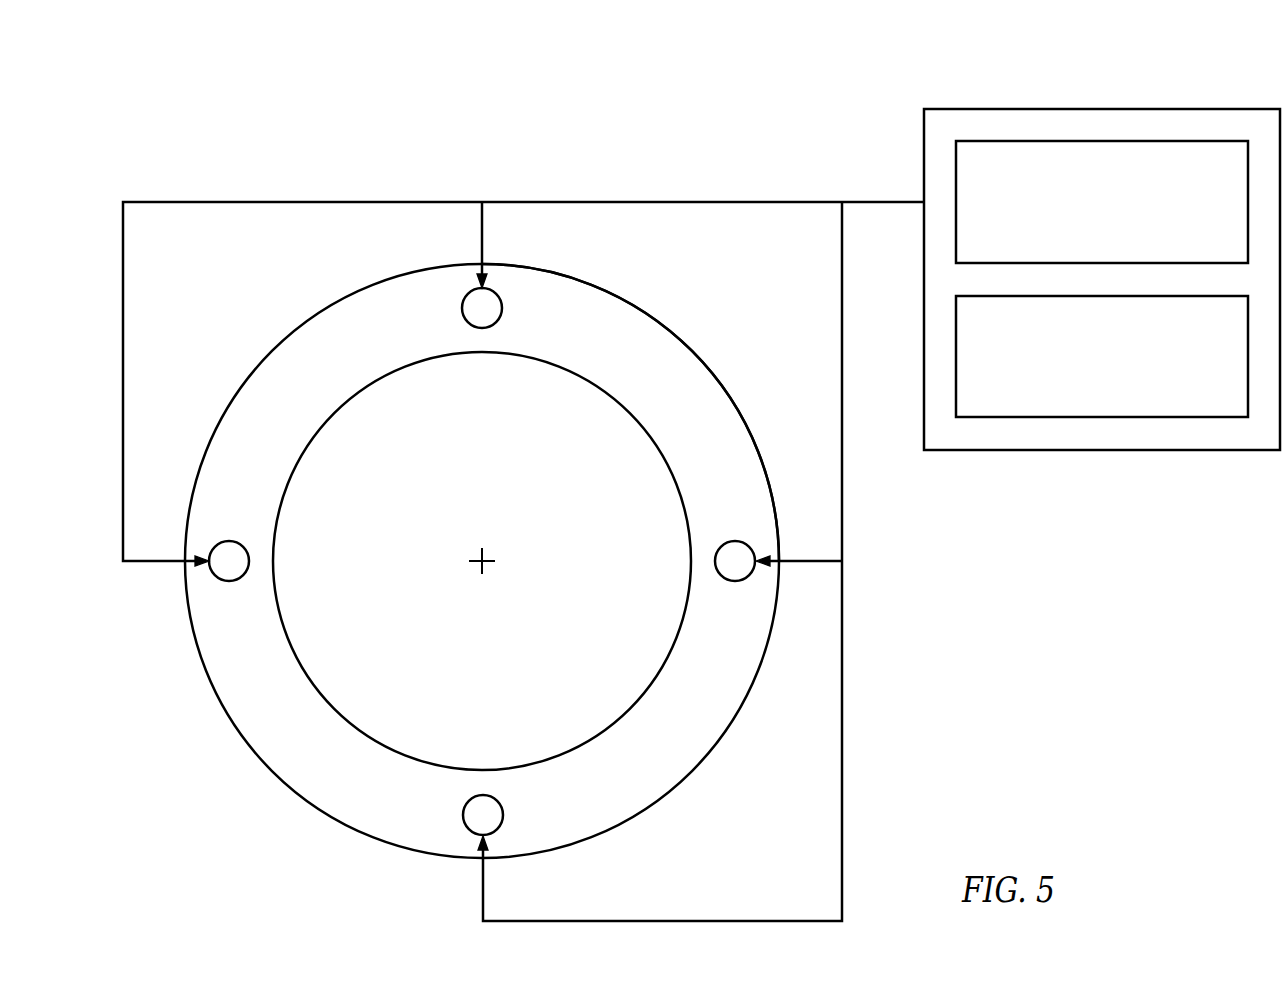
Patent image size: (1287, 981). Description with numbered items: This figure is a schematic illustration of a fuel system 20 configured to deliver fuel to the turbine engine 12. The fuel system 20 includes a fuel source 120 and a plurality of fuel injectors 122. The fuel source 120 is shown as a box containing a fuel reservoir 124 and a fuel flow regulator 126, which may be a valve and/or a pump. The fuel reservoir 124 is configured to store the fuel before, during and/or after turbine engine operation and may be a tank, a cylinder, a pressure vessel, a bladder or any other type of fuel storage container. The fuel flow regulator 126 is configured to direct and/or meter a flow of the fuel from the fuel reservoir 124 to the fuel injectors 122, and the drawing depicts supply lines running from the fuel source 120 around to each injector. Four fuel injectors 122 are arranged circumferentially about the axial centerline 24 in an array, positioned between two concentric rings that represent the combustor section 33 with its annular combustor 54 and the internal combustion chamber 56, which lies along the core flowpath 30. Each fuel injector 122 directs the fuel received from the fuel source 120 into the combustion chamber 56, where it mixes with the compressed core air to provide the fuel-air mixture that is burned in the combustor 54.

The turbine engine 12 is at (438, 459).
The fuel system 20 is at (849, 122).
The axial centerline 24 is at (488, 558).
The core flowpath 30 is at (482, 561).
The combustor section 33 is at (680, 303).
The combustor 54 is at (715, 352).
The combustion chamber 56 is at (681, 388).
The fuel source 120 is at (1198, 92).
The fuel injectors 122 is at (482, 328).
The fuel reservoir 124 is at (1121, 387).
The fuel flow regulator 126 is at (1121, 232).